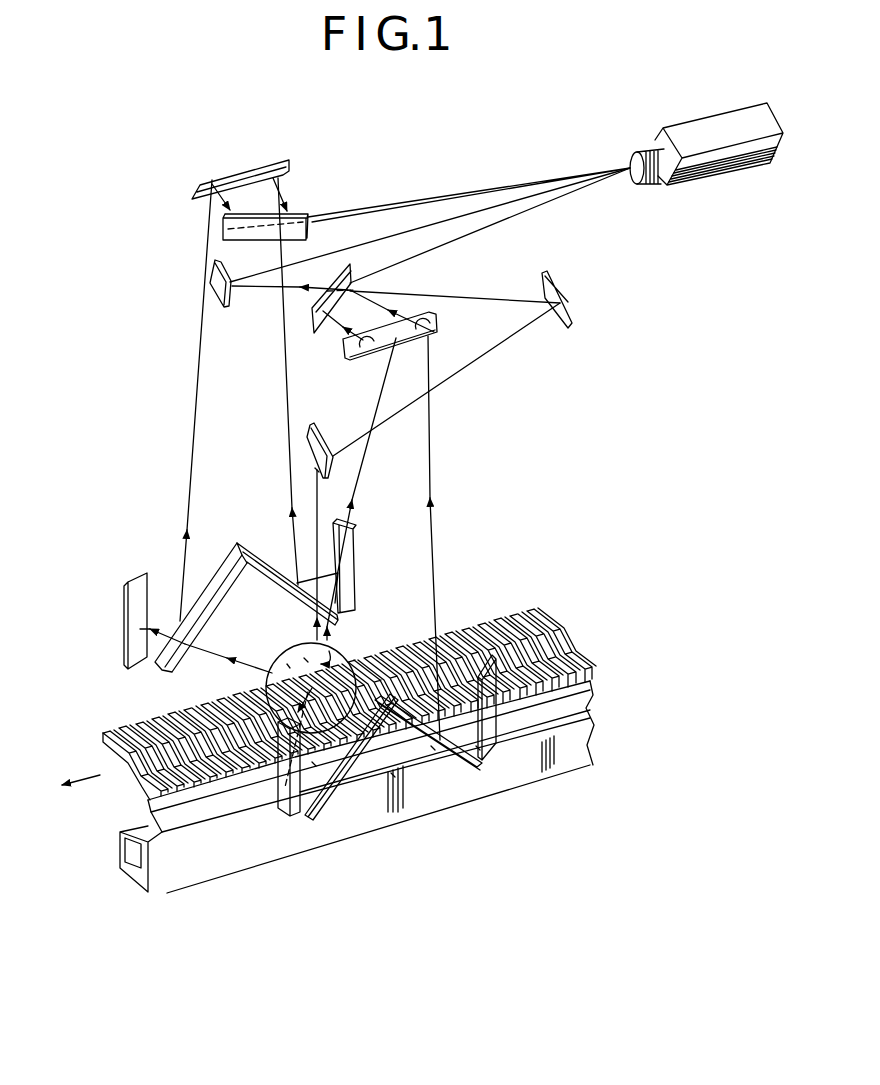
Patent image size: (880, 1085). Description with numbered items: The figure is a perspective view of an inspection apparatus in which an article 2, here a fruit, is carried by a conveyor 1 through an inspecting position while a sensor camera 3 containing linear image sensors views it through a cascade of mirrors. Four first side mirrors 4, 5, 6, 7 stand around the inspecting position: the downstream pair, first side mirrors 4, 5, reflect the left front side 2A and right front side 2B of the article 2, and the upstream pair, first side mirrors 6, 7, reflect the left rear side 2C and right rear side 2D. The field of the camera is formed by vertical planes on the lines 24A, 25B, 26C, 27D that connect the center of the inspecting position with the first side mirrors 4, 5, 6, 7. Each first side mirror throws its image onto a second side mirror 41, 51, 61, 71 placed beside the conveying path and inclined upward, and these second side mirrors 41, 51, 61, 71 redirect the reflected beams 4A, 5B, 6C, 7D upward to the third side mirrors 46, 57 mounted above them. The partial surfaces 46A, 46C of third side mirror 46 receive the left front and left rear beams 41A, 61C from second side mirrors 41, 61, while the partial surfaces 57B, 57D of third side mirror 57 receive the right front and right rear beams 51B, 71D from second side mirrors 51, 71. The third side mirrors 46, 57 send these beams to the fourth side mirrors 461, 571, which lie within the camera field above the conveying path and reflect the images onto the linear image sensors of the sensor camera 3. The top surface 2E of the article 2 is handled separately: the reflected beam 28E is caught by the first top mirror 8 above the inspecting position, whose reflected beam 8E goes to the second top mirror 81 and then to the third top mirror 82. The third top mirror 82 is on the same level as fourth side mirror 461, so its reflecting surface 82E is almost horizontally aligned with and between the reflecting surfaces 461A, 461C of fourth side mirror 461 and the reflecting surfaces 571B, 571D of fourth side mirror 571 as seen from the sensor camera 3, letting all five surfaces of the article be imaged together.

The conveyor 1 is at (522, 632).
The article 2 is at (270, 684).
The left front side 2A is at (278, 820).
The right front side 2B is at (288, 666).
The left rear side 2C is at (393, 775).
The right rear side 2D is at (330, 645).
The top surface 2E is at (306, 660).
The sensor camera 3 is at (712, 176).
The first side mirror 4 is at (289, 814).
The reflected beam 4A is at (314, 764).
The first side mirror 5 is at (123, 608).
The reflected beam 5B is at (180, 617).
The first side mirror 6 is at (503, 754).
The reflected beam 6C is at (478, 748).
The first side mirror 7 is at (357, 567).
The reflected beam 7D is at (316, 560).
The first top mirror 8 is at (308, 438).
The reflected beam 8E is at (403, 407).
The line 24A is at (296, 823).
The line 25B is at (190, 665).
The line 26C is at (433, 748).
The line 27D is at (343, 620).
The reflected beam 28E is at (317, 470).
The second side mirror 41 is at (341, 752).
The left front side reflected beam 41A is at (366, 463).
The third side mirror 46 is at (386, 346).
The partial surface 46A is at (370, 352).
The partial surface 46C is at (437, 326).
The second side mirror 51 is at (217, 578).
The right front side reflected beam 51B is at (199, 345).
The third side mirror 57 is at (243, 176).
The partial surface 57B is at (210, 182).
The partial surface 57D is at (279, 175).
The second side mirror 61 is at (460, 765).
The left rear side reflected beam 61C is at (434, 526).
The second side mirror 71 is at (267, 566).
The right rear side reflected beam 71D is at (283, 377).
The second top mirror 81 is at (563, 286).
The third top mirror 82 is at (217, 297).
The reflecting surface 82E is at (222, 283).
The fourth side mirror 461 is at (313, 316).
The reflecting surface 461A is at (328, 332).
The reflecting surface 461C is at (346, 263).
The fourth side mirror 571 is at (225, 222).
The reflecting surface 571B is at (236, 229).
The reflecting surface 571D is at (295, 218).